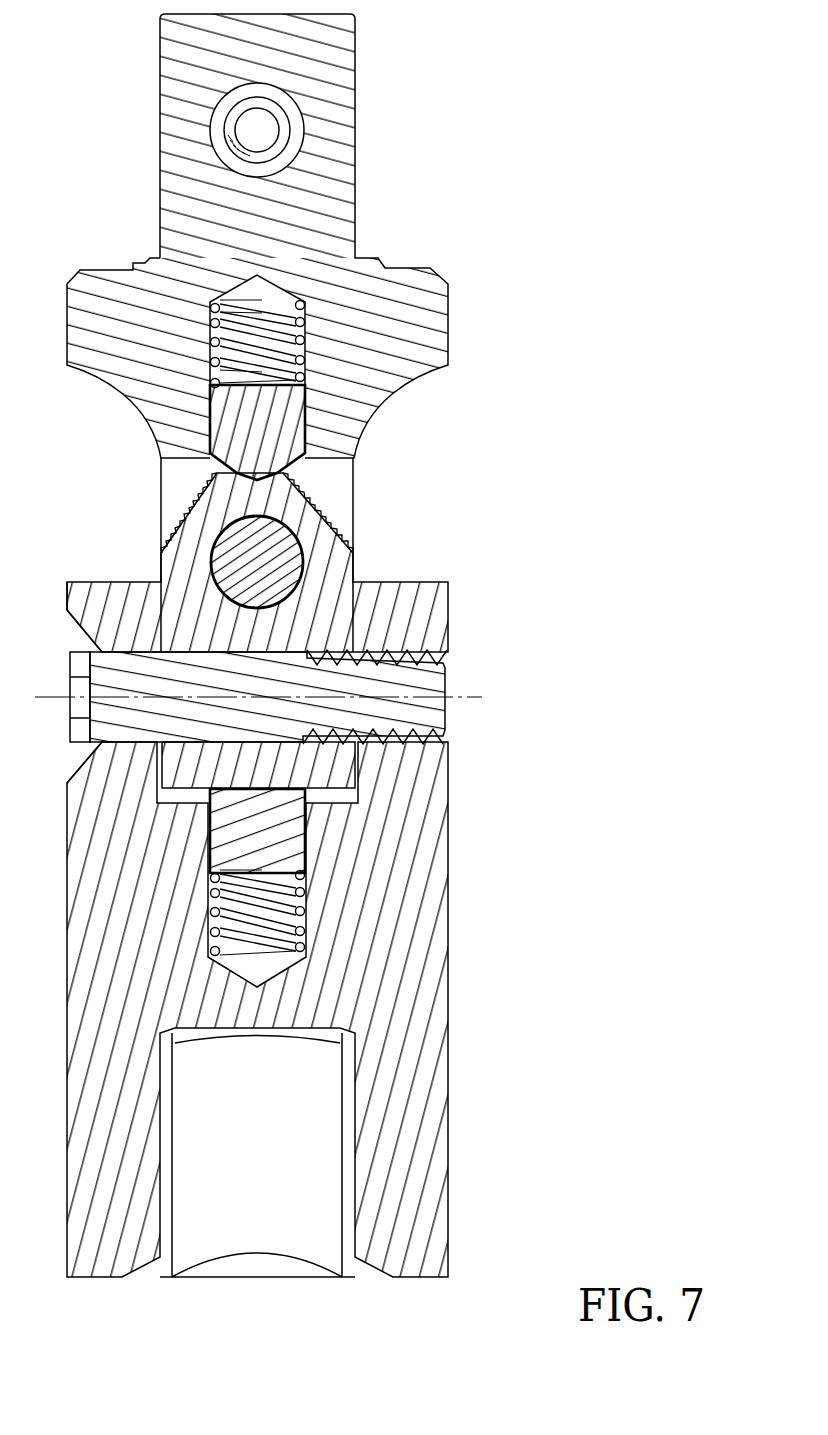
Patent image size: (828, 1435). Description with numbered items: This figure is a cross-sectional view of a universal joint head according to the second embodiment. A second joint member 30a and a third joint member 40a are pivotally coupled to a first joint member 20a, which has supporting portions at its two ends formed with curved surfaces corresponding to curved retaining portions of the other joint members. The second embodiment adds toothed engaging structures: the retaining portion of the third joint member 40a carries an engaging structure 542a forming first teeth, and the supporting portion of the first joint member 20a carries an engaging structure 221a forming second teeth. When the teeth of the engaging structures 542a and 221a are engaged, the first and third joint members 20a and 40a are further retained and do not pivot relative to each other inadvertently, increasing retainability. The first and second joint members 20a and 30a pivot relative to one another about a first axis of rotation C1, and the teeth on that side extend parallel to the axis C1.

The third joint member 40a is at (332, 145).
The first joint member 20a is at (330, 615).
The second joint member 30a is at (411, 915).
The engaging structure 221a is at (243, 446).
The engaging structure 542a is at (228, 488).
The first axis of rotation C1 is at (463, 697).